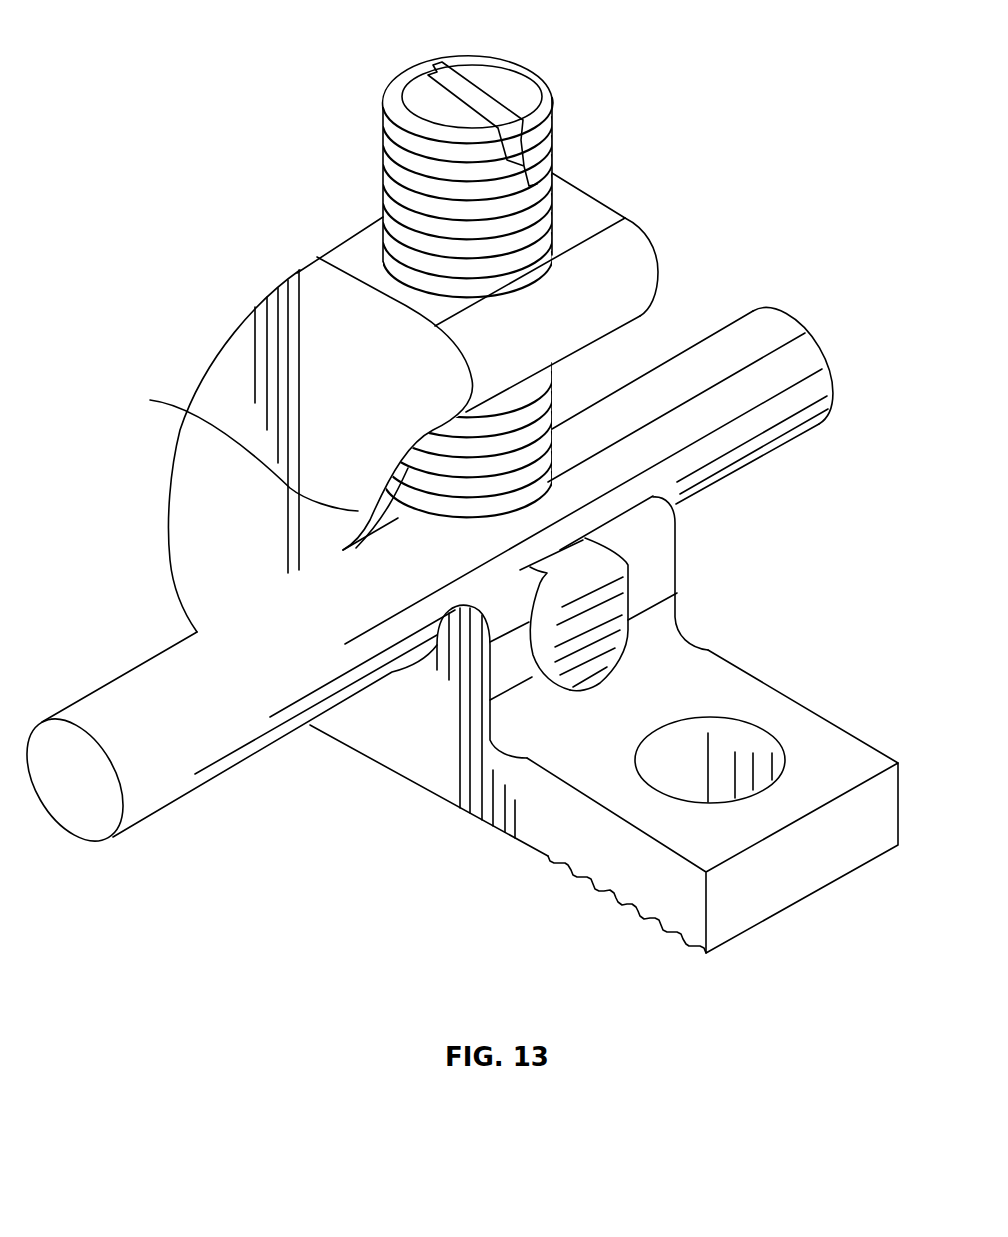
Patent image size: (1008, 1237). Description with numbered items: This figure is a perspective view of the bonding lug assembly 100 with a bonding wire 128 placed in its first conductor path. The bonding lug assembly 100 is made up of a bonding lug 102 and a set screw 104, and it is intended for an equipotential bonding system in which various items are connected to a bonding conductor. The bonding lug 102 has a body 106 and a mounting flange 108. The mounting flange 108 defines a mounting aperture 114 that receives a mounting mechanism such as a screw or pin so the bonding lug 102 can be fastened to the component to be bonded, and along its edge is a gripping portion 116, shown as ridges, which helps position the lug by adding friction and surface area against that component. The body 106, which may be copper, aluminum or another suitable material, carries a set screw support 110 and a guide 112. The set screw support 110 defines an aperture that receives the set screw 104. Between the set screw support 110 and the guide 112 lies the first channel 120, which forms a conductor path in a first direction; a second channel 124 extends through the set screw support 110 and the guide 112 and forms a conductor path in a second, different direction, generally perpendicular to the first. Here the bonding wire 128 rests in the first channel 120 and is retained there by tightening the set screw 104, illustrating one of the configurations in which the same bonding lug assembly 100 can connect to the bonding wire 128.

The bonding lug assembly 100 is at (210, 30).
The bonding lug 102 is at (225, 387).
The set screw 104 is at (405, 108).
The body 106 is at (443, 777).
The mounting flange 108 is at (604, 786).
The set screw support 110 is at (366, 255).
The guide 112 is at (657, 547).
The mounting aperture 114 is at (745, 748).
The gripping portion 116 is at (643, 908).
The first channel 120 is at (150, 400).
The second channel 124 is at (580, 633).
The bonding wire 128 is at (755, 318).